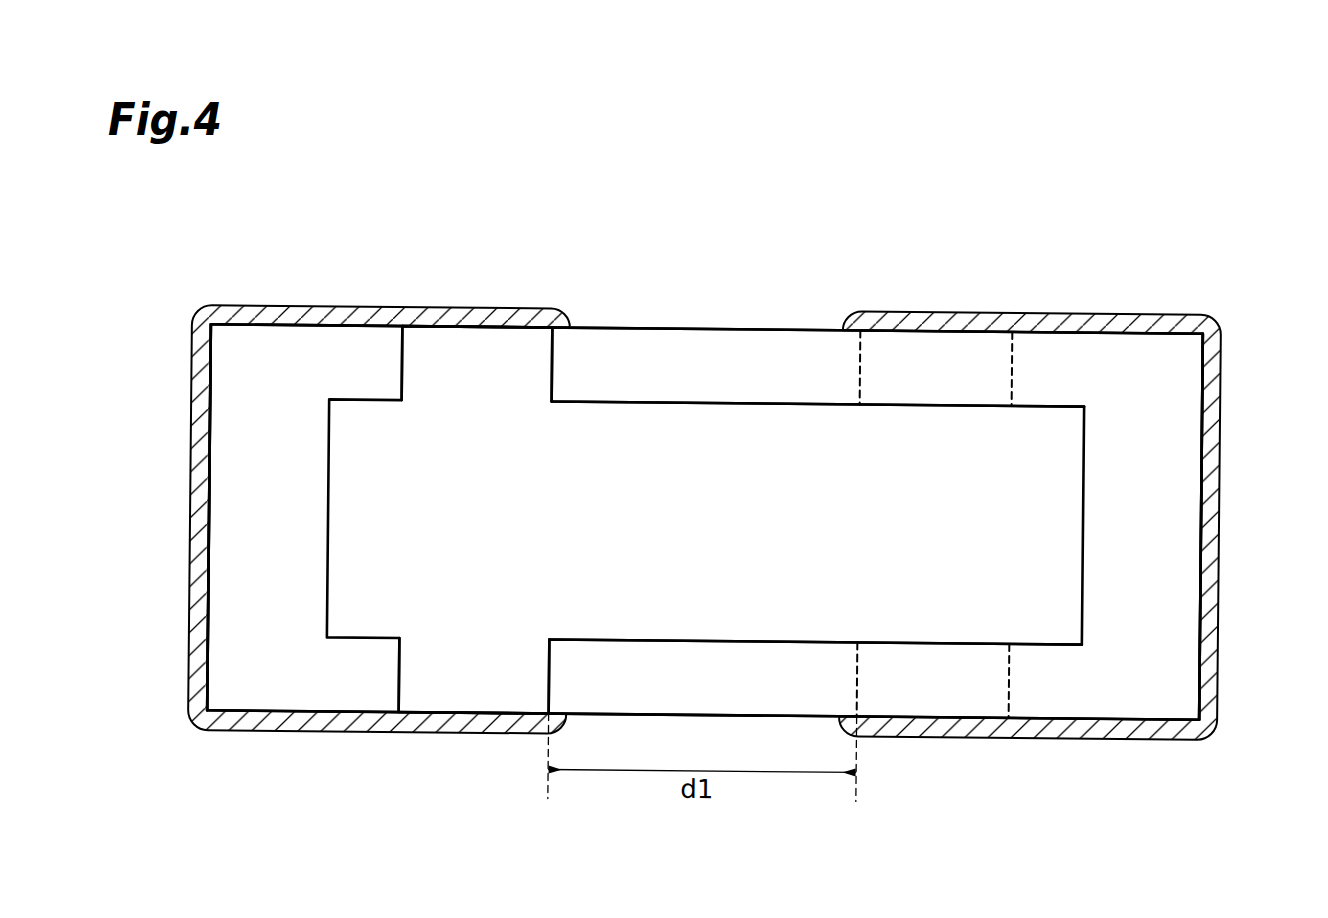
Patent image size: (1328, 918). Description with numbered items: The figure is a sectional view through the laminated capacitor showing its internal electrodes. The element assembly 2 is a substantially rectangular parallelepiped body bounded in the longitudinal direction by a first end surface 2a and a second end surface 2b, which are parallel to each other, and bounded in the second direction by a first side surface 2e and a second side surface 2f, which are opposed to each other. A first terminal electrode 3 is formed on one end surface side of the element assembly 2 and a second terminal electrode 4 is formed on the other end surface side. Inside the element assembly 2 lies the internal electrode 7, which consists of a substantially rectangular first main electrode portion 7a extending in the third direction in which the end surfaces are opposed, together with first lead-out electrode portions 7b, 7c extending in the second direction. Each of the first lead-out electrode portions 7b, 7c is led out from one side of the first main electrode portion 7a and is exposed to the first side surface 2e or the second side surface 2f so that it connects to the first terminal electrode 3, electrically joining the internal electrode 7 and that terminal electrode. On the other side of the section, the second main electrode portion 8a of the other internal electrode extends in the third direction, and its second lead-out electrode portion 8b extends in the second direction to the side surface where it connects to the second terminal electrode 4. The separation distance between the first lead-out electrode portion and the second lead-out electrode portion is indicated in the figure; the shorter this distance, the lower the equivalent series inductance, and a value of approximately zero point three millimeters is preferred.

The element assembly 2 is at (1212, 354).
The first end surface 2a is at (203, 667).
The second end surface 2b is at (1208, 517).
The first side surface 2e is at (1128, 333).
The second side surface 2f is at (1128, 722).
The first terminal electrode 3 is at (200, 402).
The second terminal electrode 4 is at (1212, 420).
The internal electrode 7 is at (955, 468).
The first main electrode portion 7a is at (765, 465).
The first lead-out electrode portion 7b is at (492, 345).
The first lead-out electrode portion 7c is at (489, 695).
The second main electrode portion 8a is at (943, 700).
The second lead-out electrode portion 8b is at (983, 360).